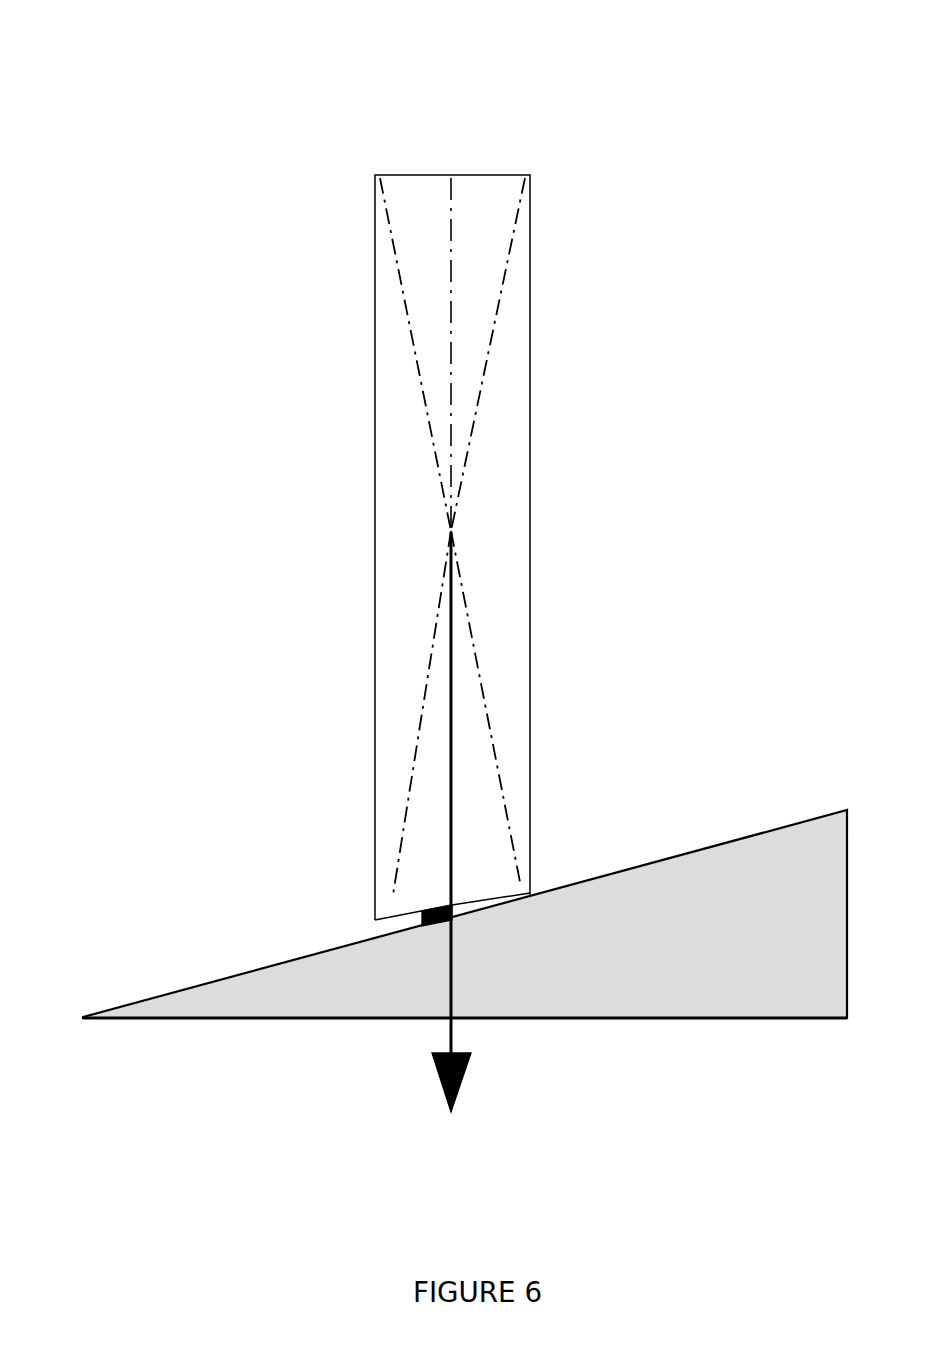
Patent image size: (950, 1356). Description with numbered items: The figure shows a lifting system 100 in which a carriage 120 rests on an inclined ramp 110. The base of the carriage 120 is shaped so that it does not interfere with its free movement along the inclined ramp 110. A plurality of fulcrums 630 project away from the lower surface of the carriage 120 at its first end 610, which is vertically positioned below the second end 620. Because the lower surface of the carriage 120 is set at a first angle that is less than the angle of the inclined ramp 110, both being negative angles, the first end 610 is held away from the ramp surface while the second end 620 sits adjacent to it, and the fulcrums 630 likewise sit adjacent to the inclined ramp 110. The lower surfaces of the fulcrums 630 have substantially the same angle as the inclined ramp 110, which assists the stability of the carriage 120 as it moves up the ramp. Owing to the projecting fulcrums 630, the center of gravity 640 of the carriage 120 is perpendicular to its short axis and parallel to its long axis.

The lifting system 100 is at (78, 70).
The inclined ramp 110 is at (392, 999).
The carriage 120 is at (530, 529).
The first end 610 is at (366, 884).
The second end 620 is at (572, 843).
The fulcrums 630 is at (375, 915).
The center of gravity 640 is at (443, 988).